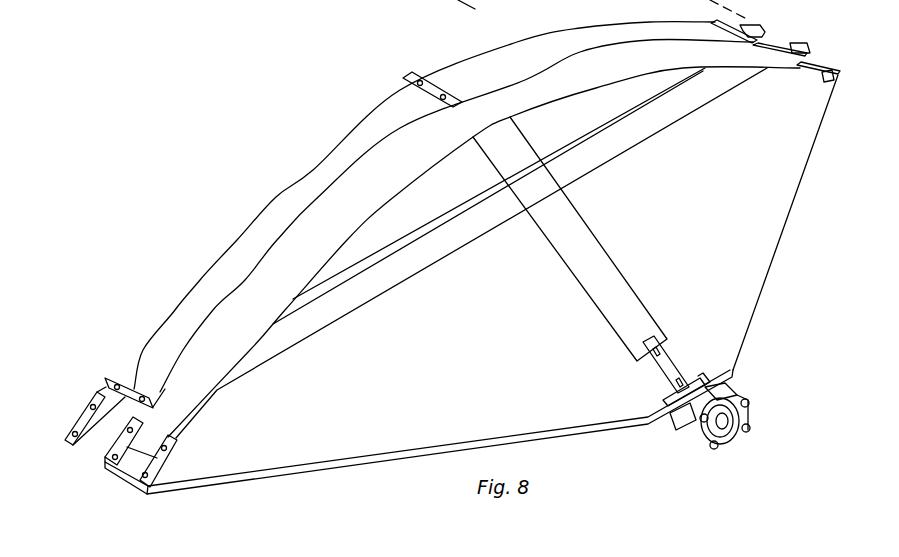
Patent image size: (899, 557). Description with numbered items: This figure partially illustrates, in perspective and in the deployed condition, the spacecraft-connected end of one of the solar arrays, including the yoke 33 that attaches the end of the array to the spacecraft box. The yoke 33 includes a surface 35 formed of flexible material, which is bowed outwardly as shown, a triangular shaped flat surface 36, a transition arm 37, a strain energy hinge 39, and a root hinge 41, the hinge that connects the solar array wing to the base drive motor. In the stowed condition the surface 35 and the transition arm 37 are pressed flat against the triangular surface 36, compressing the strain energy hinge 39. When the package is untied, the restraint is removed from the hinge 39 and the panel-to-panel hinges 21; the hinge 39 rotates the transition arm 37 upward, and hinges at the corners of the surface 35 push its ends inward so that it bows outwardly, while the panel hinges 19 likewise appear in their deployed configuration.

The panel hinges 19 is at (228, 505).
The panel-to-panel hinges 21 is at (433, 84).
The yoke 33 is at (806, 180).
The surface 35 is at (412, 218).
The triangular shaped flat surface 36 is at (484, 252).
The transition arm 37 is at (622, 290).
The strain energy hinge 39 is at (672, 360).
The root hinge 41 is at (762, 417).